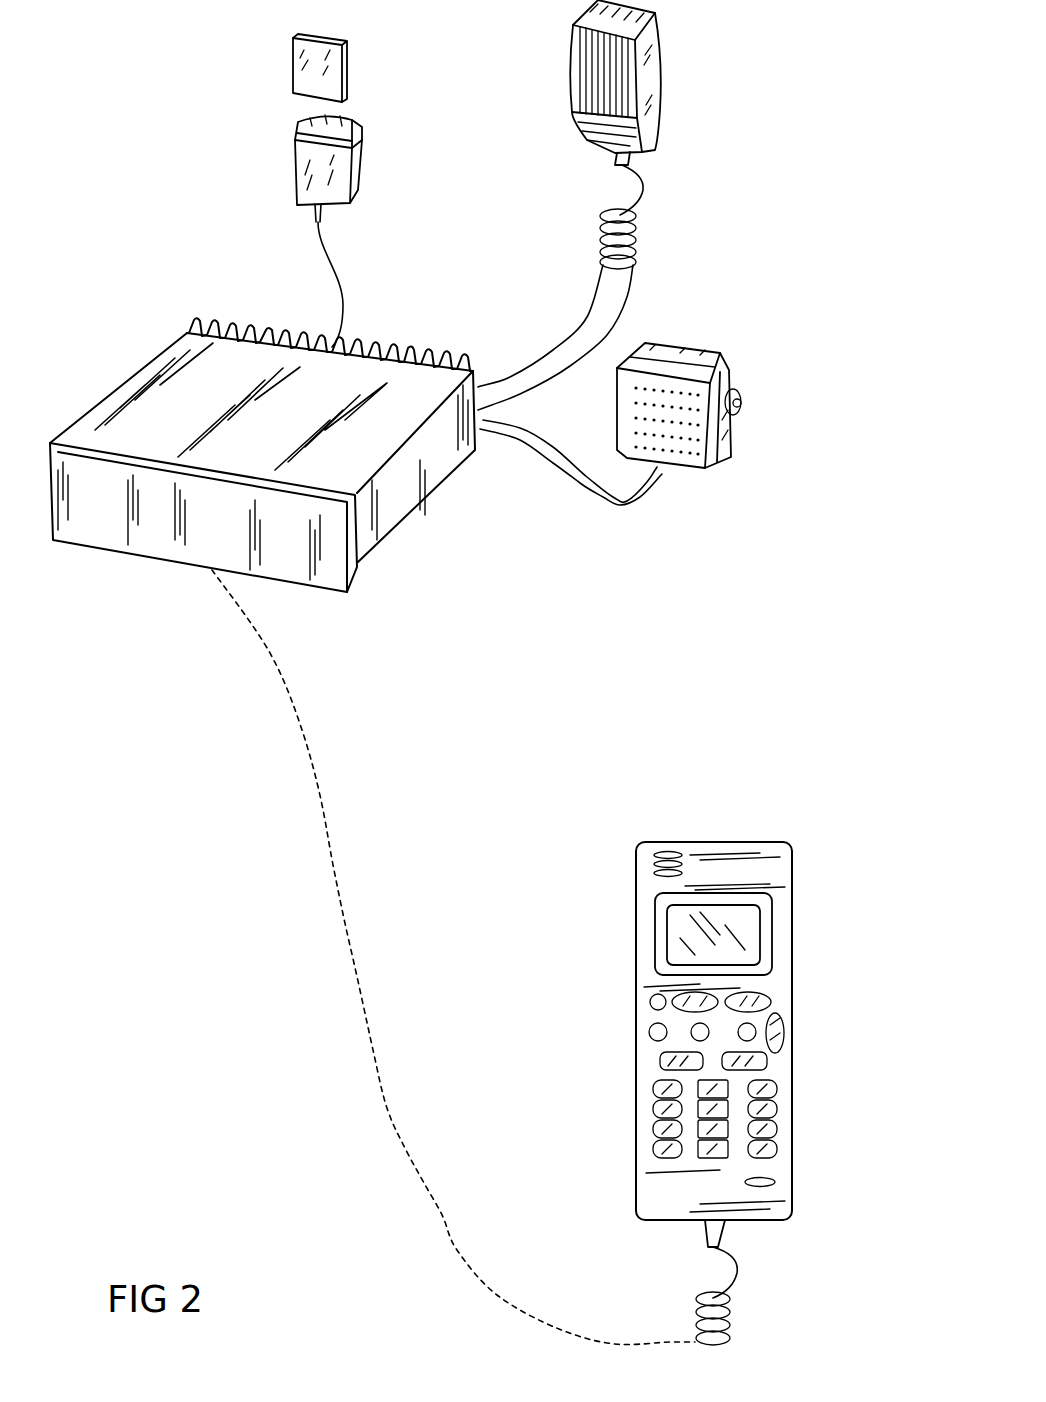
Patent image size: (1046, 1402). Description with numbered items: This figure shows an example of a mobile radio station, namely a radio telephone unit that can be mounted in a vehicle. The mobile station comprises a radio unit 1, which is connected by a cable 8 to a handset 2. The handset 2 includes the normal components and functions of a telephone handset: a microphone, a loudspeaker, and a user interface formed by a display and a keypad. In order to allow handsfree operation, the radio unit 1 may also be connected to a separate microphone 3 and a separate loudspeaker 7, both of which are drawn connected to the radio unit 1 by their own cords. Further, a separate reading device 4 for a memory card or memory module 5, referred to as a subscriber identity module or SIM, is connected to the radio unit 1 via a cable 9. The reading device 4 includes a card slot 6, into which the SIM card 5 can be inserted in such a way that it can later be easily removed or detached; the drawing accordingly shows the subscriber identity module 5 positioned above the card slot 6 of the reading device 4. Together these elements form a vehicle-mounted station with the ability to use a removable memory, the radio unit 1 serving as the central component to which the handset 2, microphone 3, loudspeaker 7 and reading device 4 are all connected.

The radio unit 1 is at (387, 540).
The handset 2 is at (675, 842).
The microphone 3 is at (665, 67).
The reading device 4 is at (414, 171).
The subscriber identity module 5 is at (292, 60).
The card slot 6 is at (353, 118).
The loudspeaker 7 is at (653, 341).
The cable 8 is at (293, 722).
The cable 9 is at (320, 240).